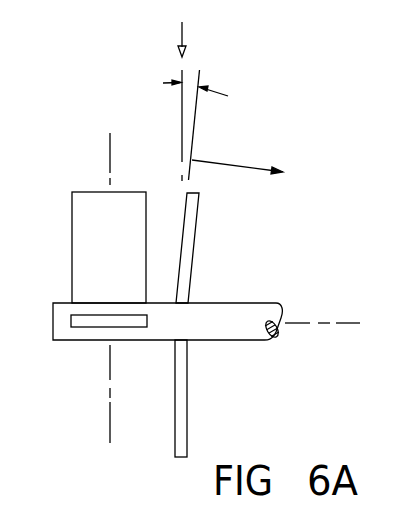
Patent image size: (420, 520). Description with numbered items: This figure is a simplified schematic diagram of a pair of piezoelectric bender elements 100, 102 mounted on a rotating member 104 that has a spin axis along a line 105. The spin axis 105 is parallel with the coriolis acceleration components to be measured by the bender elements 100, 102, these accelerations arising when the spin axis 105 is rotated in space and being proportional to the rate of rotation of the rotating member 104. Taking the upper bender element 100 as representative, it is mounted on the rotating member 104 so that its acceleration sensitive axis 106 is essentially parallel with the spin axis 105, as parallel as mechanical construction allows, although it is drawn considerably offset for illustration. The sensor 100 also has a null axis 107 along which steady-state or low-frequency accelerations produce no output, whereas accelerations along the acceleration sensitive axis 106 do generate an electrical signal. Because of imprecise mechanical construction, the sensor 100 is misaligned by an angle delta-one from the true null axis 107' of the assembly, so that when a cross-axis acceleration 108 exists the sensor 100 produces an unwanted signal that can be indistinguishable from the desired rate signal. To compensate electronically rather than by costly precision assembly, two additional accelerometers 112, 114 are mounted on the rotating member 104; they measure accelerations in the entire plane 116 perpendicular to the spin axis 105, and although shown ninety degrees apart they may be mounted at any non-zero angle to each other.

The piezoelectric bender element 100 is at (190, 240).
The piezoelectric bender element 102 is at (187, 396).
The rotating member 104 is at (213, 303).
The spin axis 105 is at (297, 323).
The acceleration sensitive axis 106 is at (235, 163).
The null axis 107 is at (214, 118).
The true null axis 107' is at (155, 125).
The cross-axis acceleration 108 is at (182, 33).
The accelerometer 112 is at (72, 245).
The accelerometer 114 is at (90, 328).
The plane 116 is at (109, 158).